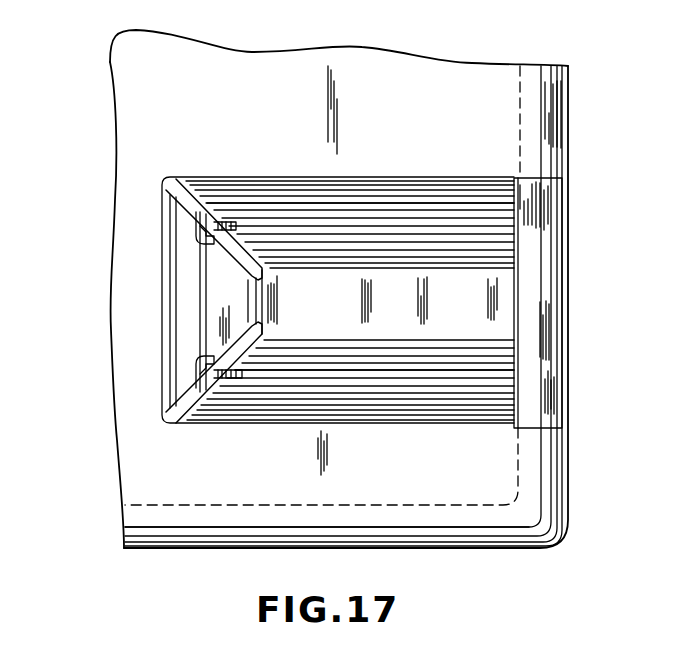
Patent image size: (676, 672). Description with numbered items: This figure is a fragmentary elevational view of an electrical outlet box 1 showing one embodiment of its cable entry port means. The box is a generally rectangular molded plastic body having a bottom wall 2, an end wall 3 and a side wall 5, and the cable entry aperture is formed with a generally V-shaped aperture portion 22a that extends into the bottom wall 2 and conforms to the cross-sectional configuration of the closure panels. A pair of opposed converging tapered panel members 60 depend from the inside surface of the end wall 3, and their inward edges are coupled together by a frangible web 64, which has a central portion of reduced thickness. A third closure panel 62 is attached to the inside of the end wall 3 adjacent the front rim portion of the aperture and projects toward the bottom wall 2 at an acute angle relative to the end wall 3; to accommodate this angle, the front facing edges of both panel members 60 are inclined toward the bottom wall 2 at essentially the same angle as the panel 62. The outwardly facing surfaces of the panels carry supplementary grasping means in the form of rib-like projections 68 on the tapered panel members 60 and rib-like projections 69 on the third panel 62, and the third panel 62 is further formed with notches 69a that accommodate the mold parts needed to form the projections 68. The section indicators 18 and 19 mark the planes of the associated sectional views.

The electrical outlet box 1 is at (452, 52).
The bottom wall 2 is at (542, 124).
The end wall 3 is at (432, 114).
The side wall 5 is at (413, 520).
The section line 18 is at (146, 8).
The section line 19 is at (98, 296).
The aperture portion 22a is at (544, 421).
The tapered panel member 60 is at (280, 196).
The third closure panel 62 is at (182, 268).
The frangible web 64 is at (352, 320).
The rib-like projection 68 is at (345, 228).
The rib-like projection 69 is at (215, 300).
The notch 69a is at (198, 222).